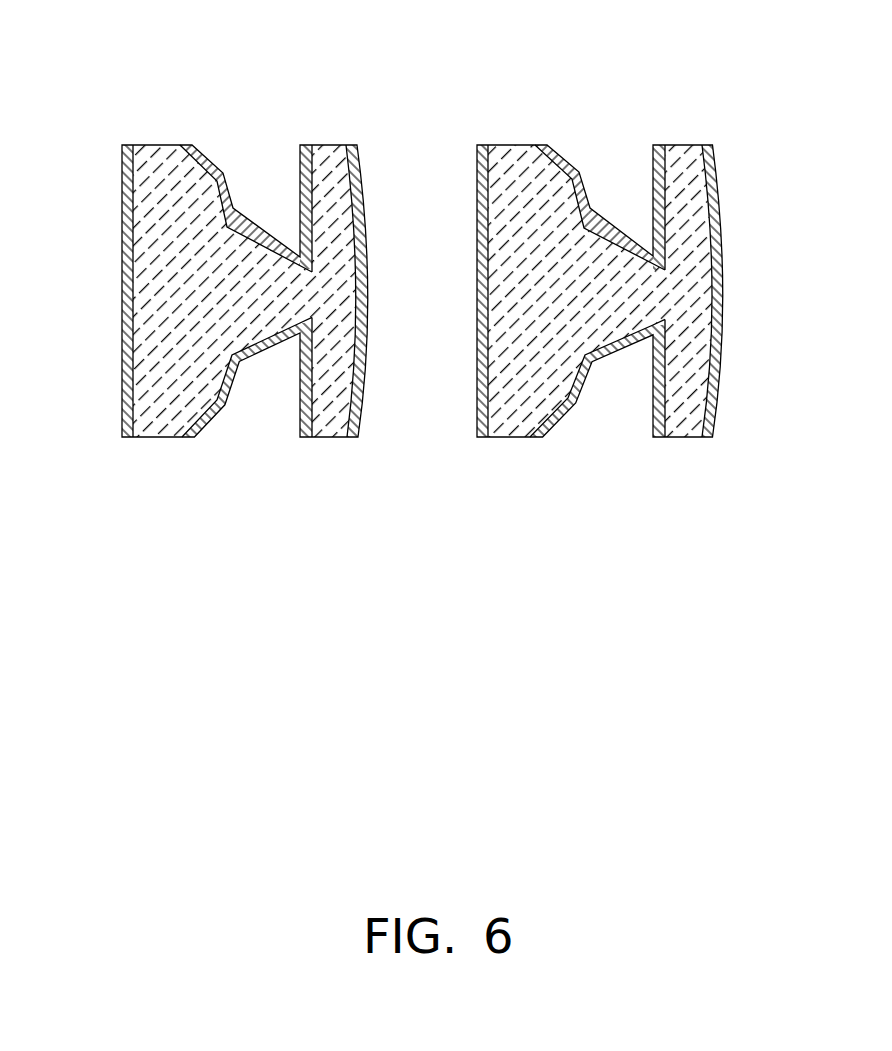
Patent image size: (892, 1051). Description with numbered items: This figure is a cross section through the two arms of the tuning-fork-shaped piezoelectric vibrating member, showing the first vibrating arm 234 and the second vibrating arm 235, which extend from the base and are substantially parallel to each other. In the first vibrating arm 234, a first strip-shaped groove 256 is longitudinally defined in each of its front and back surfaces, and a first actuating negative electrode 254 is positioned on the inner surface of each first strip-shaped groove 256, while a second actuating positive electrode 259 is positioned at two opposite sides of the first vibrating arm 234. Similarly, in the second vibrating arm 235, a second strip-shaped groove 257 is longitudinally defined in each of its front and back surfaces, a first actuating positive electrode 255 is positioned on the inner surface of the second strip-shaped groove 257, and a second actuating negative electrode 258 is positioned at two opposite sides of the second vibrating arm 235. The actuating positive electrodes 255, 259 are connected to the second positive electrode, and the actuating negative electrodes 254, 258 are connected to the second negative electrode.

The first vibrating arm 234 is at (163, 118).
The second vibrating arm 235 is at (532, 87).
The first actuating negative electrode 254 is at (212, 162).
The first actuating positive electrode 255 is at (565, 161).
The first strip-shaped groove 256 is at (262, 230).
The second strip-shaped groove 257 is at (617, 233).
The second actuating negative electrode 258 is at (477, 360).
The second actuating positive electrode 259 is at (128, 362).